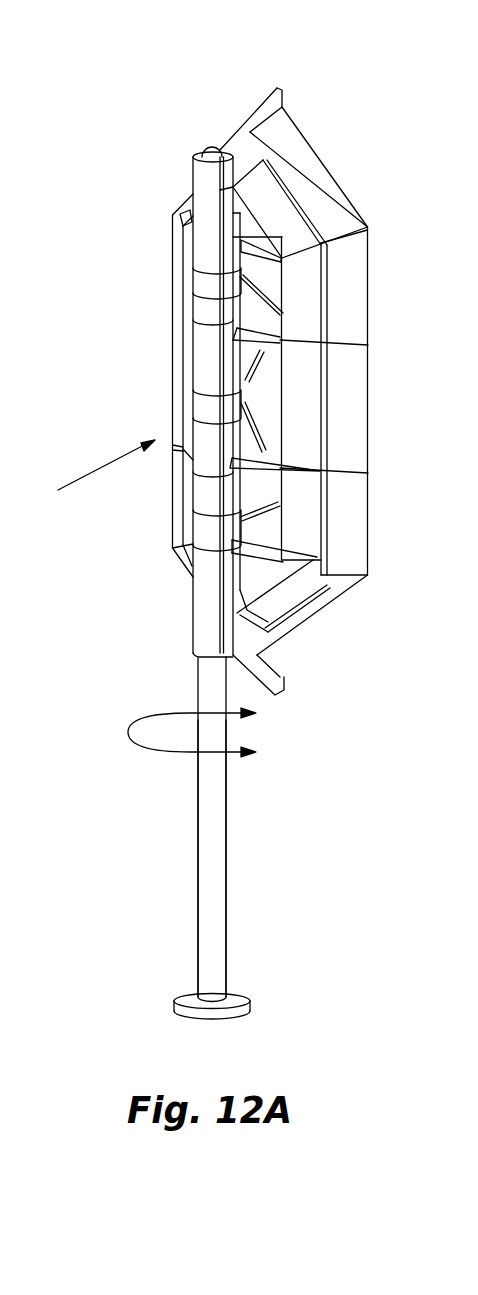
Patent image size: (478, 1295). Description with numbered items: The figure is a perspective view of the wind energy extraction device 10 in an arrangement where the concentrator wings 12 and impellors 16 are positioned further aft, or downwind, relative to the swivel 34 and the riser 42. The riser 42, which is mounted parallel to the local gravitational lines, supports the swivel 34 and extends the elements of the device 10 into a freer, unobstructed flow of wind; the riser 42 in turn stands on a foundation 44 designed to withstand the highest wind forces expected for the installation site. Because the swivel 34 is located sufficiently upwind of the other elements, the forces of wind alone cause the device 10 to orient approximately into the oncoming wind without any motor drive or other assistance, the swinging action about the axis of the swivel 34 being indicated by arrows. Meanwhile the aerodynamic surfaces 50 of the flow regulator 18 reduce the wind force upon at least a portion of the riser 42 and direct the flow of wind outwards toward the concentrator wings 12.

The wind energy extraction device 10 is at (247, 40).
The concentrator wings 12 is at (307, 300).
The impellors 16 is at (247, 382).
The flow regulator 18 is at (215, 507).
The swivel 34 is at (205, 158).
The riser 42 is at (253, 858).
The foundation 44 is at (262, 974).
The aerodynamic surfaces 50 is at (203, 240).